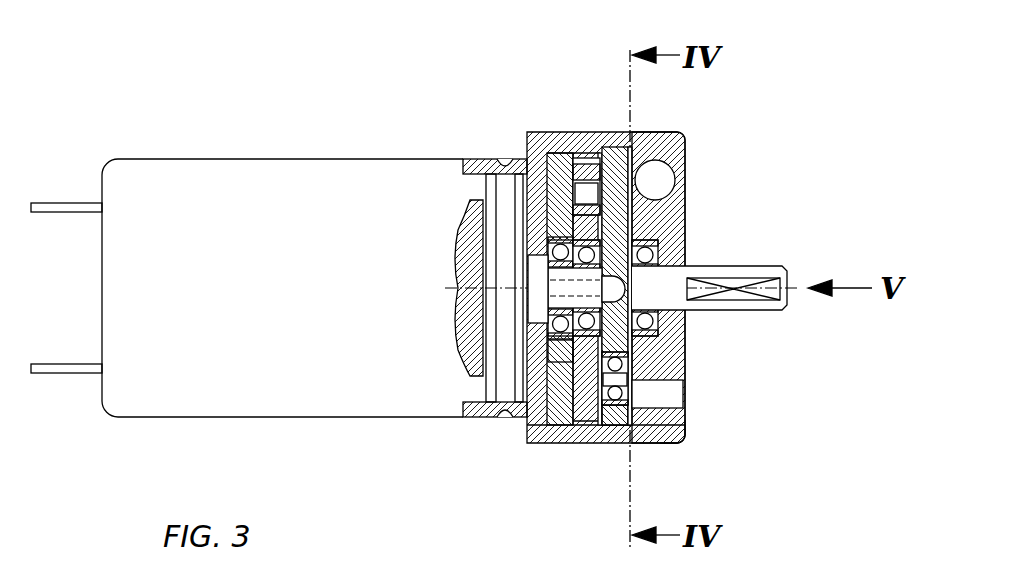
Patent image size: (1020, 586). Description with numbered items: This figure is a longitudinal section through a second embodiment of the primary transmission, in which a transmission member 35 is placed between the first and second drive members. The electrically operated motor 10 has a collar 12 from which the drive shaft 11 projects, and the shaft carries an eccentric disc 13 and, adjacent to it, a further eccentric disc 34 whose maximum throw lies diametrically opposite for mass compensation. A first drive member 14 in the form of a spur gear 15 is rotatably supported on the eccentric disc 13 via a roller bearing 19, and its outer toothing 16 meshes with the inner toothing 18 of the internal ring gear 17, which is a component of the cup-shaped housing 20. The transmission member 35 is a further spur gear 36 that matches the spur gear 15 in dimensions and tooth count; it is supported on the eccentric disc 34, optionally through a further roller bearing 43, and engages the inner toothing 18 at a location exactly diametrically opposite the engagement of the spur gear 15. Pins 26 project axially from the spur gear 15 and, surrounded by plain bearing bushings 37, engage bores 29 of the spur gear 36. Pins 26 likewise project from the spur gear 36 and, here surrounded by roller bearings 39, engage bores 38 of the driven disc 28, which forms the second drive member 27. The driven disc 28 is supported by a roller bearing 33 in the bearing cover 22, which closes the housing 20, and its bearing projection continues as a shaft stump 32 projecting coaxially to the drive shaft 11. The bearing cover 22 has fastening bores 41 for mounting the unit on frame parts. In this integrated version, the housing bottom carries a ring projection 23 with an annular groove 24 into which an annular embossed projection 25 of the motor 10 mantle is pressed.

The electrically operated motor 10 is at (182, 224).
The drive shaft 11 is at (580, 297).
The collar 12 is at (532, 312).
The eccentric disc 13 is at (565, 283).
The first drive member 14 is at (545, 443).
The spur gear 15 is at (498, 410).
The outer toothing 16 is at (545, 135).
The internal ring gear 17 is at (566, 135).
The inner toothing 18 is at (561, 445).
The roller bearing 19 is at (557, 268).
The housing 20 is at (658, 444).
The bearing cover 22 is at (684, 353).
The ring projection 23 is at (465, 155).
The annular groove 24 is at (487, 410).
The annular embossed projection 25 is at (504, 162).
The pins 26 is at (658, 131).
The second drive member 27 is at (624, 445).
The driven disc 28 is at (630, 132).
The bores 29 is at (666, 205).
The shaft stump 32 is at (760, 272).
The roller bearing 33 is at (683, 258).
The eccentric disc 34 is at (533, 298).
The transmission member 35 is at (581, 134).
The spur gear 36 is at (584, 445).
The plain bearing bushings 37 is at (597, 132).
The bores 38 is at (684, 375).
The roller bearings 39 is at (606, 445).
The fastening bores 41 is at (658, 184).
The roller bearing 43 is at (557, 362).